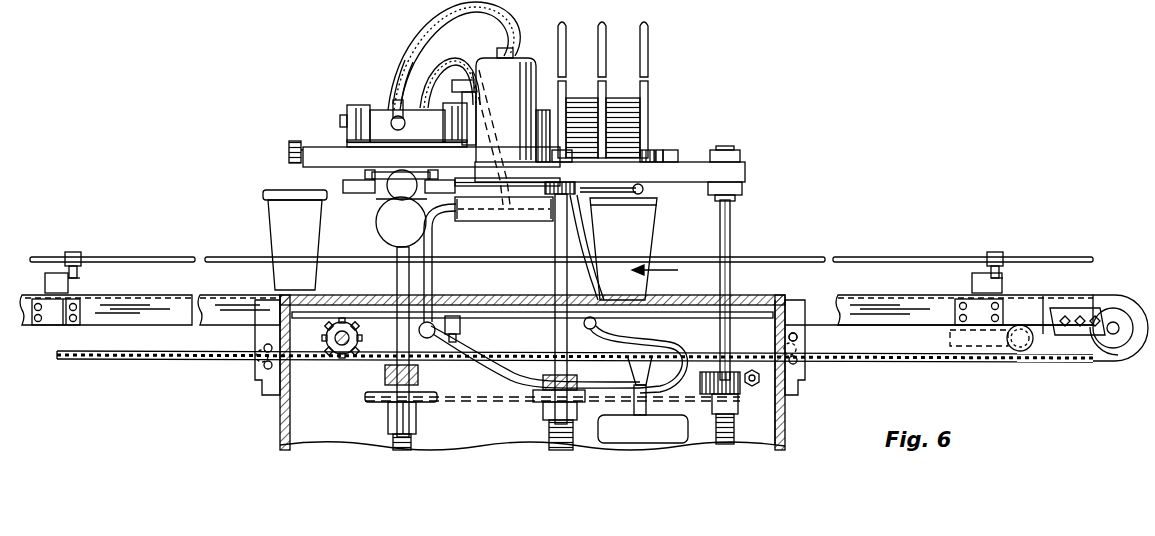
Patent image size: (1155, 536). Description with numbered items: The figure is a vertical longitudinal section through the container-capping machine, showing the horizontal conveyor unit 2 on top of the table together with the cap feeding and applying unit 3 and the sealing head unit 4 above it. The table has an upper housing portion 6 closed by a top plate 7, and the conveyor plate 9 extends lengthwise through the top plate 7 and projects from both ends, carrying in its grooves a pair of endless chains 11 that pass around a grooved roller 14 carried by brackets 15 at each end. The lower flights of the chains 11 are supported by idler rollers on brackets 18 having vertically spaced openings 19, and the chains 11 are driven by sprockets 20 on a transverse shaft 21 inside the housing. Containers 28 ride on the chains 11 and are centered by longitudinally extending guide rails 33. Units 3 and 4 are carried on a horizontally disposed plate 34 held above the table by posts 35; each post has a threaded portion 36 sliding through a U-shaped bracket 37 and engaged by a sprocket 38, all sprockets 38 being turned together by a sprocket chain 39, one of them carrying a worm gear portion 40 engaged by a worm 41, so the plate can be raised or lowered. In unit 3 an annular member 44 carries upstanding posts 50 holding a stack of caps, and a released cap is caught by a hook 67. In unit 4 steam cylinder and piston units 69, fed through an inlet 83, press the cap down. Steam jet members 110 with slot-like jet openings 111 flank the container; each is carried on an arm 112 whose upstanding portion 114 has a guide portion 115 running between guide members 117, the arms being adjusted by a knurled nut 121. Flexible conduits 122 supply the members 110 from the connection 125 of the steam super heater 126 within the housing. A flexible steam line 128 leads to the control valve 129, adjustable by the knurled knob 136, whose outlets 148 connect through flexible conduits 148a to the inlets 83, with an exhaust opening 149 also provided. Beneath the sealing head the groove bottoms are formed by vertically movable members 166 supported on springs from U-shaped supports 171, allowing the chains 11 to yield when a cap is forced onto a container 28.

The horizontal conveyor unit 2 is at (918, 328).
The cap feeding and applying unit 3 is at (648, 158).
The sealing head unit 4 is at (541, 142).
The upper housing portion 6 is at (786, 423).
The top plate 7 is at (672, 297).
The longitudinally extending plate 9 is at (1056, 323).
The chains 11 is at (862, 293).
The grooved roller 14 is at (1090, 344).
The brackets 15 is at (1116, 348).
The brackets 18 is at (256, 334).
The vertically spaced openings 19 is at (798, 338).
The sprockets 20 is at (347, 322).
The transversely extending shaft 21 is at (342, 346).
The container 28 is at (650, 228).
The guide rails 33 is at (758, 260).
The horizontally disposed plate 34 is at (694, 178).
The posts 35 is at (730, 198).
The threaded portion 36 is at (418, 374).
The U-shaped bracket 37 is at (398, 423).
The sprocket 38 is at (366, 399).
The sprocket chain 39 is at (476, 404).
The worm gear portion 40 is at (704, 372).
The worm 41 is at (751, 368).
The annular member 44 is at (660, 152).
The upstanding posts 50 is at (598, 42).
The hook 67 is at (646, 187).
The steam cylinder and piston units 69 is at (528, 75).
The inlet 83 is at (508, 57).
The steam jet members 110 is at (508, 228).
The jet opening 111 is at (507, 221).
The arm 112 is at (470, 226).
The upstanding portion 114 is at (408, 214).
The guide portion 115 is at (365, 176).
The guide members 117 is at (360, 188).
The knurled nut 121 is at (395, 190).
The flexible conduit 122 is at (588, 228).
The connection to coil 125 is at (635, 388).
The steam super heater 126 is at (672, 438).
The flexible steam line 128 is at (455, 60).
The control valve 129 is at (352, 107).
The knurled knob 136 is at (291, 146).
The steam outlets 148 is at (405, 124).
The flexible conduit 148a is at (425, 42).
The exhaust opening 149 is at (394, 100).
The vertically movable members 166 is at (490, 312).
The support 171 is at (460, 322).